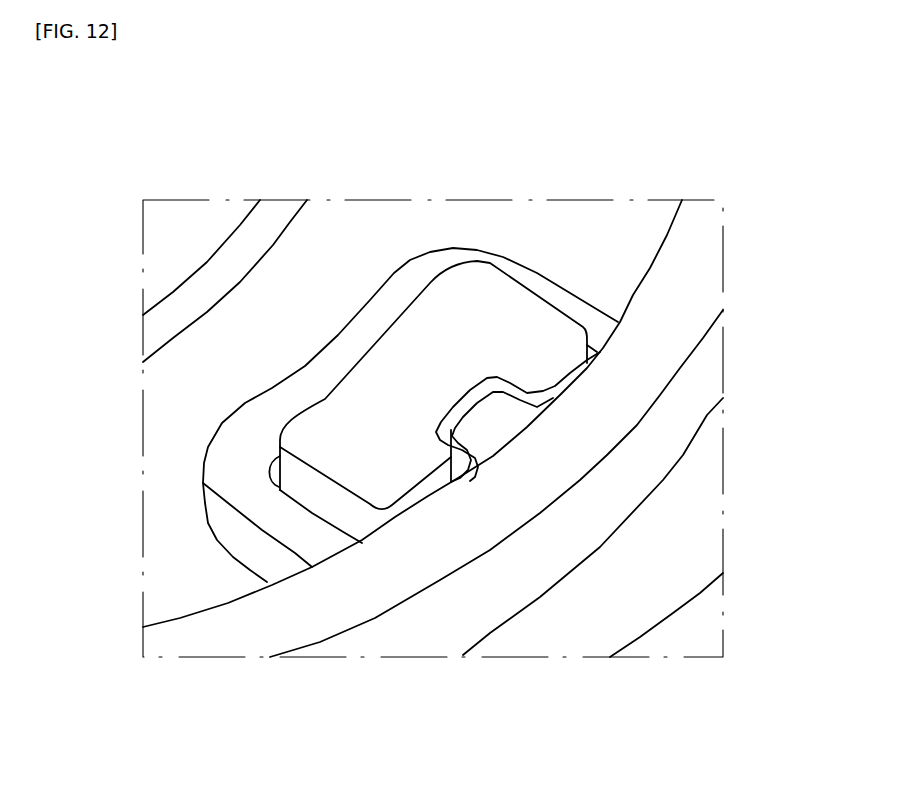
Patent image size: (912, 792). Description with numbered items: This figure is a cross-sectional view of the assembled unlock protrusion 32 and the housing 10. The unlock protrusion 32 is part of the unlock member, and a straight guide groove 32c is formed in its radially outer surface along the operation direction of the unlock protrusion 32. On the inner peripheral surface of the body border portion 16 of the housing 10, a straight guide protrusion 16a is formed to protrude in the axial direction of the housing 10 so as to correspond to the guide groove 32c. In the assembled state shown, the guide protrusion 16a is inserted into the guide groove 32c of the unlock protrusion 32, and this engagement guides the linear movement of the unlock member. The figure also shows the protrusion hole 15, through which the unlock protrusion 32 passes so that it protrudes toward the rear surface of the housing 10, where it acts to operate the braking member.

The housing 10 is at (583, 237).
The protrusion hole 15 is at (268, 472).
The body border portion 16 is at (402, 567).
The guide protrusion 16a is at (480, 418).
The unlock protrusion 32 is at (328, 417).
The guide groove 32c is at (455, 400).